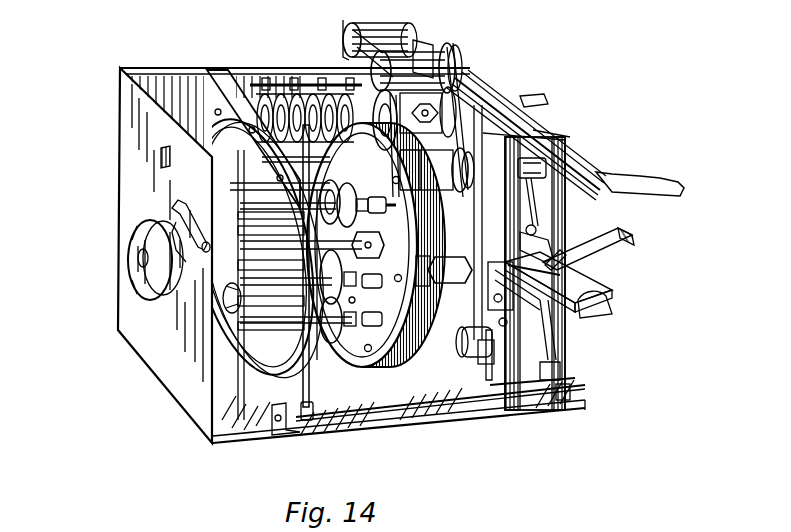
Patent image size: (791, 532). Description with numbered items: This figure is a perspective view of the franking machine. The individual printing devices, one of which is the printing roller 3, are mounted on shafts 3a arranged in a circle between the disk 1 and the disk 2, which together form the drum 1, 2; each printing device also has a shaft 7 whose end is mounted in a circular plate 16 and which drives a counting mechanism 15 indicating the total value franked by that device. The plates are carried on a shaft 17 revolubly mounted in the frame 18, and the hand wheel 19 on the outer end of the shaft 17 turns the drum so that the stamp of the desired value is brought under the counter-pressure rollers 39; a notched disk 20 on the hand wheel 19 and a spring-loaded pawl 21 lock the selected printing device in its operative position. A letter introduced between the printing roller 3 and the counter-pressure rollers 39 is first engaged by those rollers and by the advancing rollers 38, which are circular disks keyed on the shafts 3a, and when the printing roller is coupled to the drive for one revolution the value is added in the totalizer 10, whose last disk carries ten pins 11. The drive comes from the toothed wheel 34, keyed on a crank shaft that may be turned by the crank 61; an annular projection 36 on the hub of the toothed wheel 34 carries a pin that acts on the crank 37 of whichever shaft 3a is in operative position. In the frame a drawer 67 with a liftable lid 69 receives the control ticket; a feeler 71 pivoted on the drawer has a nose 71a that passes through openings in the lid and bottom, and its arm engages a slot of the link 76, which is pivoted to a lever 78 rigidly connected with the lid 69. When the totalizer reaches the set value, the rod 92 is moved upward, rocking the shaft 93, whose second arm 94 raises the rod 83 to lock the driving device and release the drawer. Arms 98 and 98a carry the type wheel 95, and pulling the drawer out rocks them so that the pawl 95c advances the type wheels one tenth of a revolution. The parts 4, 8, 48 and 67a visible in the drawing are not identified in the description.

The disk 1 is at (406, 316).
The disk 2 is at (427, 245).
The printing roller 3 is at (360, 145).
The shaft 3a is at (395, 186).
The chain 4 is at (498, 96).
The shaft 7 is at (289, 327).
The bolt 8 is at (342, 194).
The totalizer 10 is at (290, 88).
The pins 11 is at (260, 105).
The counting mechanism 15 is at (236, 284).
The circular plate 16 is at (236, 352).
The shaft 17 is at (268, 248).
The frame 18 is at (351, 255).
The hand wheel 19 is at (136, 282).
The disk with notches 20 is at (181, 266).
The pawl 21 is at (180, 212).
The toothed wheel 34 is at (530, 102).
The annular projection 36 is at (455, 78).
The crank 37 is at (475, 92).
The feeding rollers 38 is at (480, 118).
The counter-pressure rollers 39 is at (435, 47).
The bracket 48 is at (487, 353).
The crank 61 is at (597, 172).
The drawer 67 is at (608, 290).
The tray flap 67a is at (598, 315).
The lid 69 is at (622, 230).
The feeler 71 is at (272, 284).
The nose 71a is at (558, 272).
The link 76 is at (533, 225).
The lever 78 is at (537, 242).
The rod 83 is at (560, 368).
The rod 92 is at (309, 373).
The shaft 93 is at (382, 407).
The arm 94 is at (310, 407).
The type wheel 95 is at (508, 339).
The pawl 95c is at (540, 315).
The arm 98 is at (503, 298).
The arm 98a is at (547, 342).